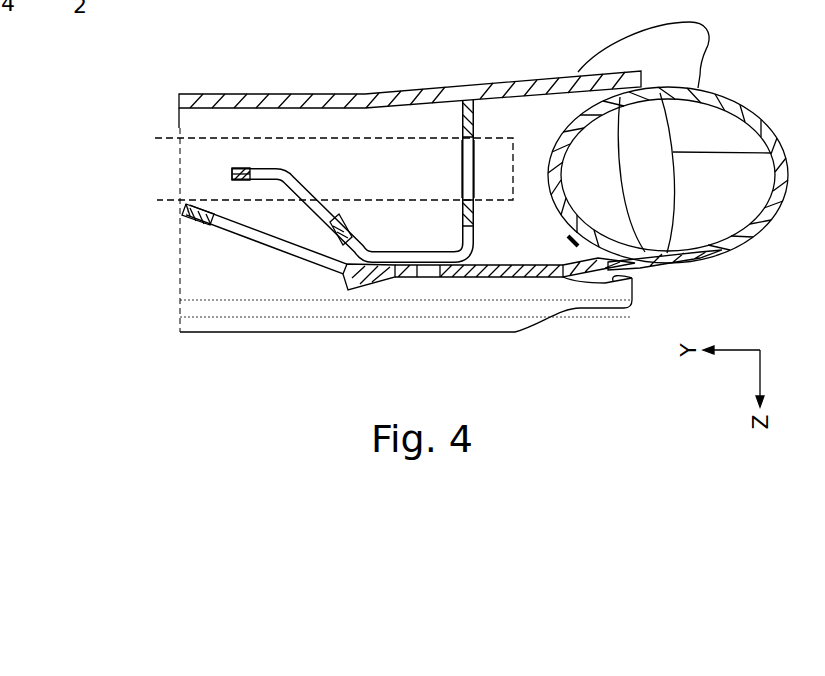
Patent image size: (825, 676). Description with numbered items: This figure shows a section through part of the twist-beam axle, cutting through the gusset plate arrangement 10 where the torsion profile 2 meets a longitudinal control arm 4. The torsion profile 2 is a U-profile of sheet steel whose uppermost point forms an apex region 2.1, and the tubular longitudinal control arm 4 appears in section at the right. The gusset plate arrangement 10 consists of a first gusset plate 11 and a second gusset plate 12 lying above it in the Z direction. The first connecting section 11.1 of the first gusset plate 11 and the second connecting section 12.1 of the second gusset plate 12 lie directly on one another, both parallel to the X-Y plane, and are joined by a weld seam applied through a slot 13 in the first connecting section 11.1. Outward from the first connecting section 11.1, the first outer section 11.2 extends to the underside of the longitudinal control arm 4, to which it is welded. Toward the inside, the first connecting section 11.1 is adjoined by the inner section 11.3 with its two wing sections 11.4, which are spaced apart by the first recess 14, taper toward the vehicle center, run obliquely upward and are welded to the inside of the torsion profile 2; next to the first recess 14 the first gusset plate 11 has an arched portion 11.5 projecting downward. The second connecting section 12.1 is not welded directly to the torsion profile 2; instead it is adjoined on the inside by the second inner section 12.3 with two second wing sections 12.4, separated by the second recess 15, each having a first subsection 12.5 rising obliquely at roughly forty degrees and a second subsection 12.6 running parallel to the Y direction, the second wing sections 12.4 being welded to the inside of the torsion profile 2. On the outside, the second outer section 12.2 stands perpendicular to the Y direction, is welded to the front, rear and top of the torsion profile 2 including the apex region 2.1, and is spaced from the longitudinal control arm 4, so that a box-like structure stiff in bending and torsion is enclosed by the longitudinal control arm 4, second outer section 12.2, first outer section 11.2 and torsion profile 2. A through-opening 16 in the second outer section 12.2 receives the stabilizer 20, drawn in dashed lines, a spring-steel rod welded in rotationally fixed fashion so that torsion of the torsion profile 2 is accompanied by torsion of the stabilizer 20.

The torsion profile 2 is at (327, 327).
The apex region 2.1 is at (195, 112).
The longitudinal control arm 4 is at (771, 232).
The gusset plate arrangement 10 is at (371, 109).
The first gusset plate 11 is at (218, 230).
The first connecting section 11.1 is at (478, 285).
The first outer section 11.2 is at (569, 287).
The inner section 11.3 is at (267, 253).
The wing section 11.4 is at (188, 210).
The arched portion 11.5 is at (376, 296).
The second gusset plate 12 is at (248, 170).
The second connecting section 12.1 is at (404, 246).
The second outer section 12.2 is at (461, 128).
The second inner section 12.3 is at (277, 212).
The second wing section 12.4 is at (208, 219).
The first subsection 12.5 is at (310, 229).
The second subsection 12.6 is at (268, 162).
The slot 13 is at (428, 281).
The first recess 14 is at (209, 219).
The second recess 15 is at (243, 175).
The through-opening 16 is at (476, 156).
The stabilizer 20 is at (333, 138).